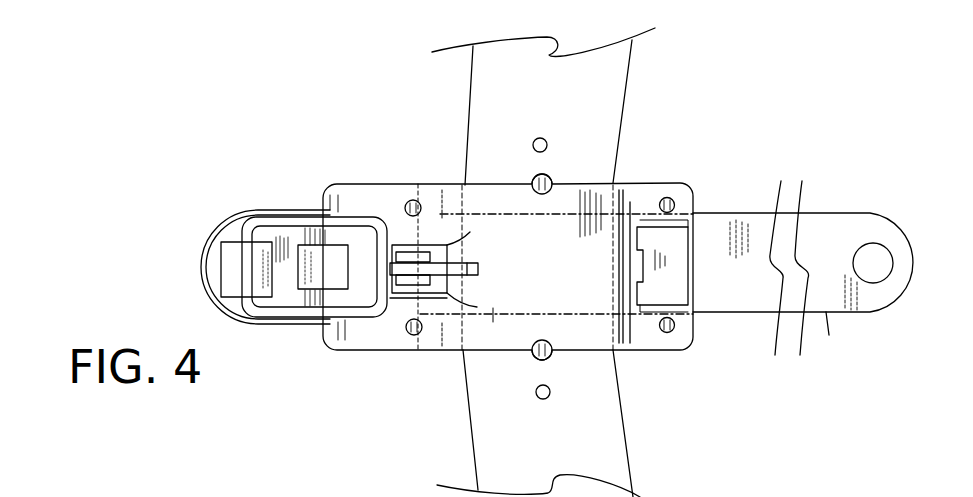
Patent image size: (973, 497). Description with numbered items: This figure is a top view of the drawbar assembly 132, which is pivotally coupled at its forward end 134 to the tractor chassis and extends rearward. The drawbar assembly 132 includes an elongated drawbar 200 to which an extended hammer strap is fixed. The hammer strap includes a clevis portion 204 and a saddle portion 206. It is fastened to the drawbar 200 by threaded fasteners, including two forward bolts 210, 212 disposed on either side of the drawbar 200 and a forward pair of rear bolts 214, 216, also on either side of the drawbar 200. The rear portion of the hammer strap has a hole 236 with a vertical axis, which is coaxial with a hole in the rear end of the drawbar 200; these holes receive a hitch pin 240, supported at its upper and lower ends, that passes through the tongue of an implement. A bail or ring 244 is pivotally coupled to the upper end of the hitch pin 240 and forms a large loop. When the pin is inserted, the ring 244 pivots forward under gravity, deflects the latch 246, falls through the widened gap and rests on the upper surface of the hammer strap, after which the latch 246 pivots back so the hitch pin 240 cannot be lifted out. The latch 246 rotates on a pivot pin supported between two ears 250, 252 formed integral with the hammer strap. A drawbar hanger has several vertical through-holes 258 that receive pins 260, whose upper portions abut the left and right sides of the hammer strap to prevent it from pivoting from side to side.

The drawbar assembly 132 is at (772, 72).
The forward end 134 is at (829, 335).
The drawbar 200 is at (850, 213).
The clevis portion 204 is at (232, 163).
The saddle portion 206 is at (498, 113).
The forward bolt 210 is at (665, 333).
The forward bolt 212 is at (663, 197).
The rear bolt 214 is at (418, 352).
The rear bolt 216 is at (413, 199).
The hole 236 is at (231, 229).
The hitch pin 240 is at (256, 257).
The ring 244 is at (335, 217).
The latch 246 is at (480, 268).
The ear 250 is at (427, 245).
The ear 252 is at (477, 307).
The through-hole 258 is at (542, 138).
The pin 260 is at (540, 176).